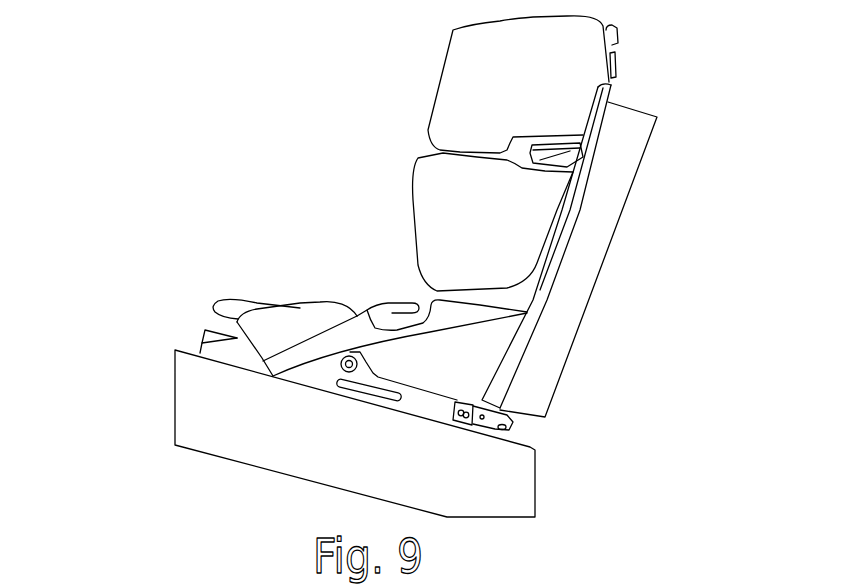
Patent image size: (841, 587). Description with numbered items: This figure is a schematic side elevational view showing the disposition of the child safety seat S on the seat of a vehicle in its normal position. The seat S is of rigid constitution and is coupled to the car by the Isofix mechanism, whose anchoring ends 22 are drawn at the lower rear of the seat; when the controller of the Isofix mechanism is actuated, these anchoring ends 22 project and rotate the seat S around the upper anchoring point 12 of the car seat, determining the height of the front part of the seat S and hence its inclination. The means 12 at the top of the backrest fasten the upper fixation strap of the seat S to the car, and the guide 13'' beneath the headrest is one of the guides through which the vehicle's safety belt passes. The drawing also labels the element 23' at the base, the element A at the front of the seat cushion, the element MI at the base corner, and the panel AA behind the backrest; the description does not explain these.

The means for fastening the upper fixation strap 12 is at (613, 88).
The guide 13'' is at (638, 180).
The anchoring ends 22 is at (495, 418).
The seat base 23' is at (317, 433).
The seat S is at (400, 102).
The armrest A is at (231, 304).
The seat interface member MI is at (210, 334).
The backrest panel AA is at (592, 332).